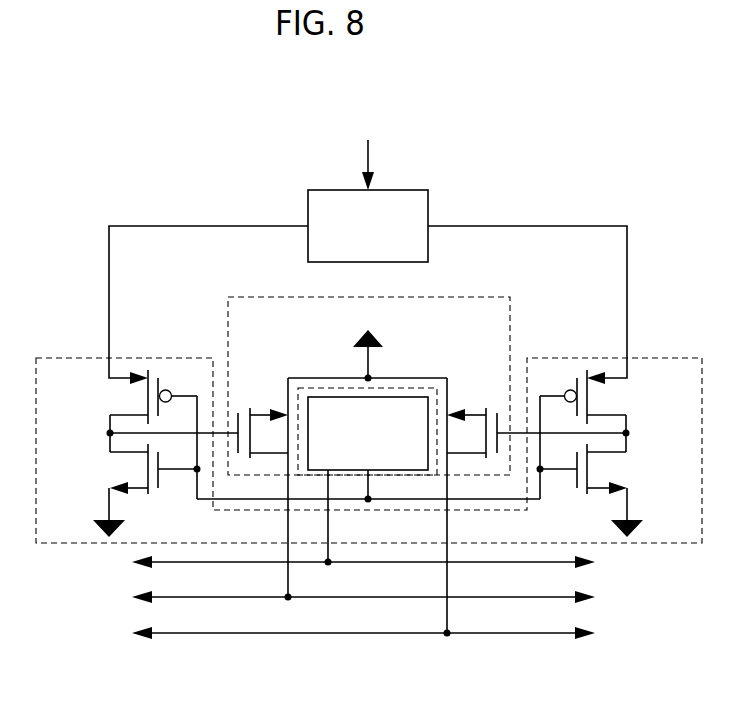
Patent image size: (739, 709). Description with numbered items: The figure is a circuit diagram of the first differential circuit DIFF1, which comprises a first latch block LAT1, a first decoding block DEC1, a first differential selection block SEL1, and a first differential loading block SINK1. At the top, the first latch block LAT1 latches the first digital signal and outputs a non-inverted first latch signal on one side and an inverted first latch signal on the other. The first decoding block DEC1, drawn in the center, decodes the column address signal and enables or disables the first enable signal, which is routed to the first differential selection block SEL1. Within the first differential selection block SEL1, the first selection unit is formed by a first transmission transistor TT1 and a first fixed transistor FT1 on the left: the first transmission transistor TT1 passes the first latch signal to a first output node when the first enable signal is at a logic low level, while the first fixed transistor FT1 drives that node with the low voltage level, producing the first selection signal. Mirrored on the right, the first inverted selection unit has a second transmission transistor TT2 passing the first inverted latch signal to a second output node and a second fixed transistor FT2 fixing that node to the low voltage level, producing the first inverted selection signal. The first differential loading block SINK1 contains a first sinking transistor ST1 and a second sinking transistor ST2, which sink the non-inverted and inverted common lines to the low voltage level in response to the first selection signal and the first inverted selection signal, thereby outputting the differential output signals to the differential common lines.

The first differential circuit DIFF1 is at (158, 113).
The first latch block LAT1 is at (368, 226).
The first differential loading block SINK1 is at (485, 297).
The first differential selection block SEL1 is at (669, 357).
The first decoding block DEC1 is at (367, 475).
The first transmission transistor TT1 is at (138, 397).
The second transmission transistor TT2 is at (600, 397).
The first fixed transistor FT1 is at (138, 490).
The second fixed transistor FT2 is at (600, 490).
The first sinking transistor ST1 is at (263, 420).
The second sinking transistor ST2 is at (472, 420).